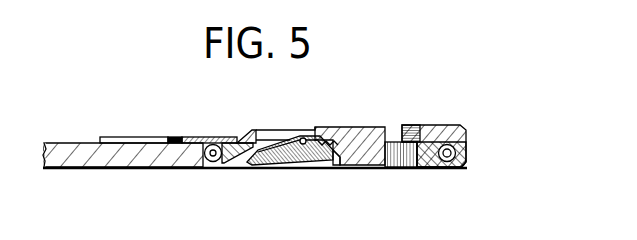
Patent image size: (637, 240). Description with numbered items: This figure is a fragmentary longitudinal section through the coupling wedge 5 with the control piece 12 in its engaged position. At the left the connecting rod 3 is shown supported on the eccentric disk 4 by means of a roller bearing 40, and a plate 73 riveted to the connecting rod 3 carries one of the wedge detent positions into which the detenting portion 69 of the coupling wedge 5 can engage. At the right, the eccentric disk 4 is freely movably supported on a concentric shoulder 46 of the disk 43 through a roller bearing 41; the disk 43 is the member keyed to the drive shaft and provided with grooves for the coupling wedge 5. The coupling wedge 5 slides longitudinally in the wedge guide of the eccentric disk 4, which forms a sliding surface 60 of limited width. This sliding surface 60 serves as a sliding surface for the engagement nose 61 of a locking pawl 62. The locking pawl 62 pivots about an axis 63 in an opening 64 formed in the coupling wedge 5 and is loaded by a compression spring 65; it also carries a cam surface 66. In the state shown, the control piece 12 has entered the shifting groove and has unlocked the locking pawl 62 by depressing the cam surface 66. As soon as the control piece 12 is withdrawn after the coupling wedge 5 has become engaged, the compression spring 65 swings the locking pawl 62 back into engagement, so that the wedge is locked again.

The connecting rod 3 is at (75, 157).
The plate 73 is at (108, 140).
The detenting portion 69 is at (192, 139).
The cam surface 66 is at (270, 142).
The control piece 12 is at (274, 133).
The axis 63 is at (303, 138).
The compression spring 65 is at (322, 140).
The coupling wedge 5 is at (365, 132).
The disk 43 is at (447, 127).
The roller bearing 40 is at (213, 165).
The sliding surface 60 is at (236, 168).
The engagement nose 61 is at (246, 162).
The locking pawl 62 is at (298, 157).
The opening 64 is at (333, 158).
The eccentric disk 4 is at (421, 168).
The roller bearing 41 is at (446, 163).
The concentric shoulder 46 is at (466, 166).